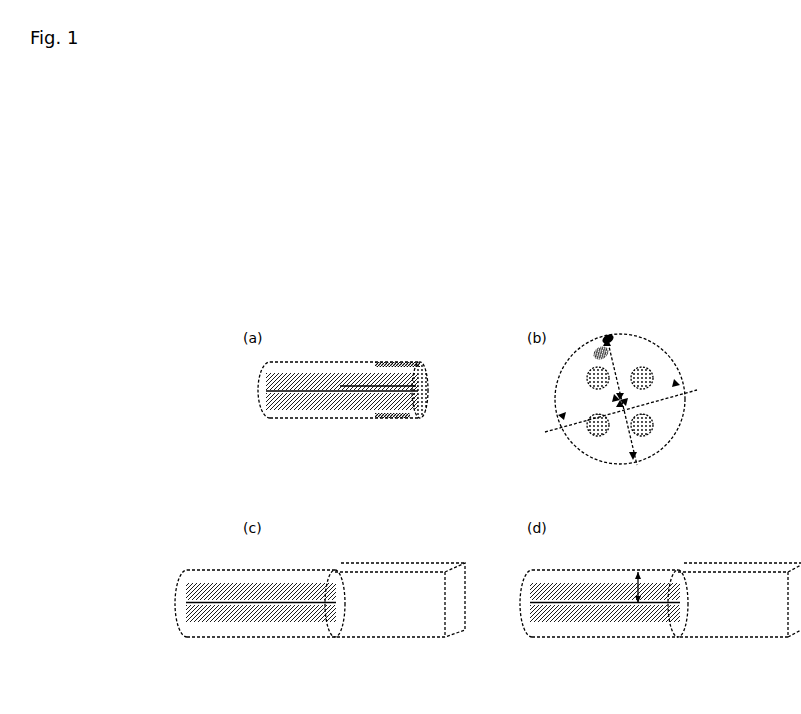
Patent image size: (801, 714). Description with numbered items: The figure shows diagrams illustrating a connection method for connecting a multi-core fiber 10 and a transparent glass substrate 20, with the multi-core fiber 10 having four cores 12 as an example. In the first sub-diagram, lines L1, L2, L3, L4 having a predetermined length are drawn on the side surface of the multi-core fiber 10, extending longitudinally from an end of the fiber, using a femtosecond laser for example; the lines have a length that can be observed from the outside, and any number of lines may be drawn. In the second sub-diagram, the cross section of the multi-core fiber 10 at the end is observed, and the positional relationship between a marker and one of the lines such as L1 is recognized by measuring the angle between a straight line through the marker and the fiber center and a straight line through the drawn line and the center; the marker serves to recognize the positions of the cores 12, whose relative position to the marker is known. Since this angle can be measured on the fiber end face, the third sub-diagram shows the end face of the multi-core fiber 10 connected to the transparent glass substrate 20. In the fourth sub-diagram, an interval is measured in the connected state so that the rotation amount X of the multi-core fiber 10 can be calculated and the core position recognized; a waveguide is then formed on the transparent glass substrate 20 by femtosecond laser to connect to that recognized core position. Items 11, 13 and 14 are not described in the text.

The multi-core fiber 10 is at (305, 362).
The core element 11 is at (368, 383).
The core 12 is at (338, 418).
The end face 13 is at (425, 368).
The marker region 14 is at (606, 334).
The transparent glass substrate 20 is at (390, 637).
The line L1 is at (610, 415).
The line L2 is at (397, 420).
The line L3 is at (426, 380).
The line L4 is at (388, 361).
The rotation amount X is at (636, 576).